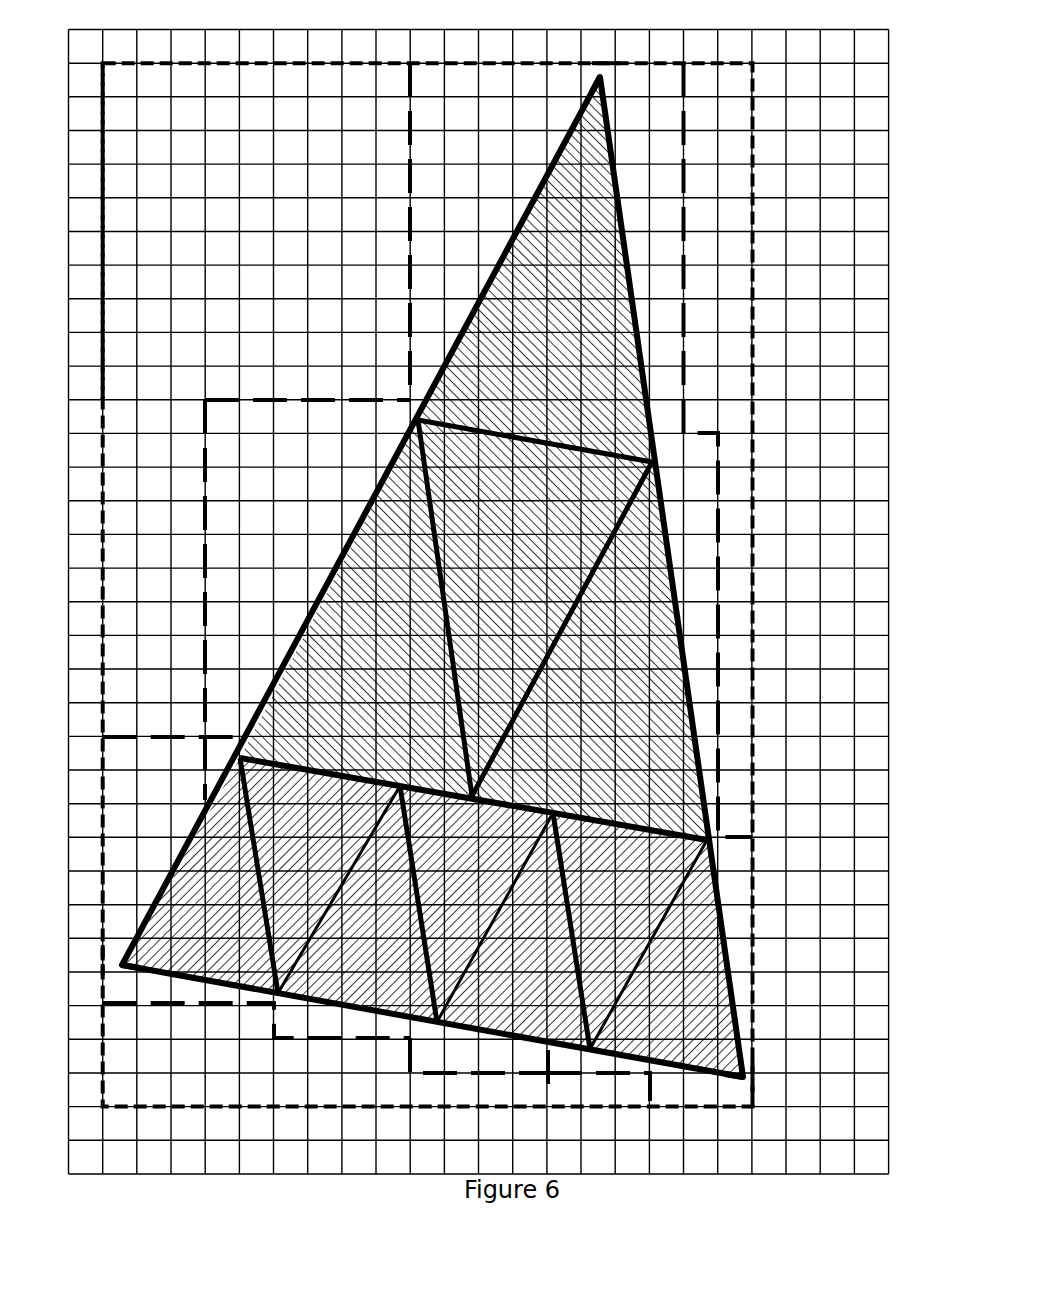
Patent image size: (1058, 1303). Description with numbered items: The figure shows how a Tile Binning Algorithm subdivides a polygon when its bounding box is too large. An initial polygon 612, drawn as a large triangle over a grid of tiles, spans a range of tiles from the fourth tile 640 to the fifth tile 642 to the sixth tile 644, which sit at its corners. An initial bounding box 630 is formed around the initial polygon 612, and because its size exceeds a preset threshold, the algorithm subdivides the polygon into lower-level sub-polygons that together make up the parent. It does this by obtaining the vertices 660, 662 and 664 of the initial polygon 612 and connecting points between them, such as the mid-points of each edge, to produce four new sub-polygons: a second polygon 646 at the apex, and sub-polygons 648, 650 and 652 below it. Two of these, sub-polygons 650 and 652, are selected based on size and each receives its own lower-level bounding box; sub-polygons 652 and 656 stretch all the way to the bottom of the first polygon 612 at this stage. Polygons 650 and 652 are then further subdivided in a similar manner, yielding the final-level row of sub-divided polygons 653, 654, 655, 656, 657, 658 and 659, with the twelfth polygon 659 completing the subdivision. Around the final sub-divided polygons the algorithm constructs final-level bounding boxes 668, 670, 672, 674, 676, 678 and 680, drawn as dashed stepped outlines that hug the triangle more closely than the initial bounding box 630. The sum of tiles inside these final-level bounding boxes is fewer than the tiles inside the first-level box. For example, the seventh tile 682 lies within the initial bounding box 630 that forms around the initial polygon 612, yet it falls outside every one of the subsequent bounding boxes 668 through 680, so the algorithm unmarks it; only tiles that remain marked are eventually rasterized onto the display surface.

The initial polygon 612 is at (316, 558).
The initial bounding box 630 is at (760, 290).
The fourth tile 640 is at (116, 955).
The fifth tile 642 is at (758, 1080).
The sixth tile 644 is at (607, 67).
The second polygon 646 is at (584, 294).
The sub-polygon 648 is at (534, 556).
The sub-polygon 650 is at (400, 656).
The sub-polygon 652 is at (630, 681).
The sub-divided polygon 653 is at (208, 941).
The sub-divided polygon 654 is at (310, 839).
The sub-divided polygon 655 is at (386, 949).
The sub-polygon 656 is at (474, 871).
The sub-divided polygon 657 is at (541, 956).
The sub-divided polygon 658 is at (638, 911).
The twelfth polygon 659 is at (694, 983).
The vertex 660 is at (126, 977).
The vertex 662 is at (735, 1086).
The vertex 664 is at (593, 80).
The final-level bounding box 668 is at (403, 175).
The final-level bounding box 670 is at (362, 393).
The final-level bounding box 672 is at (152, 722).
The final-level bounding box 674 is at (283, 1046).
The final-level bounding box 676 is at (384, 1054).
The final-level bounding box 678 is at (520, 1087).
The final-level bounding box 680 is at (692, 320).
The seventh tile 682 is at (220, 180).